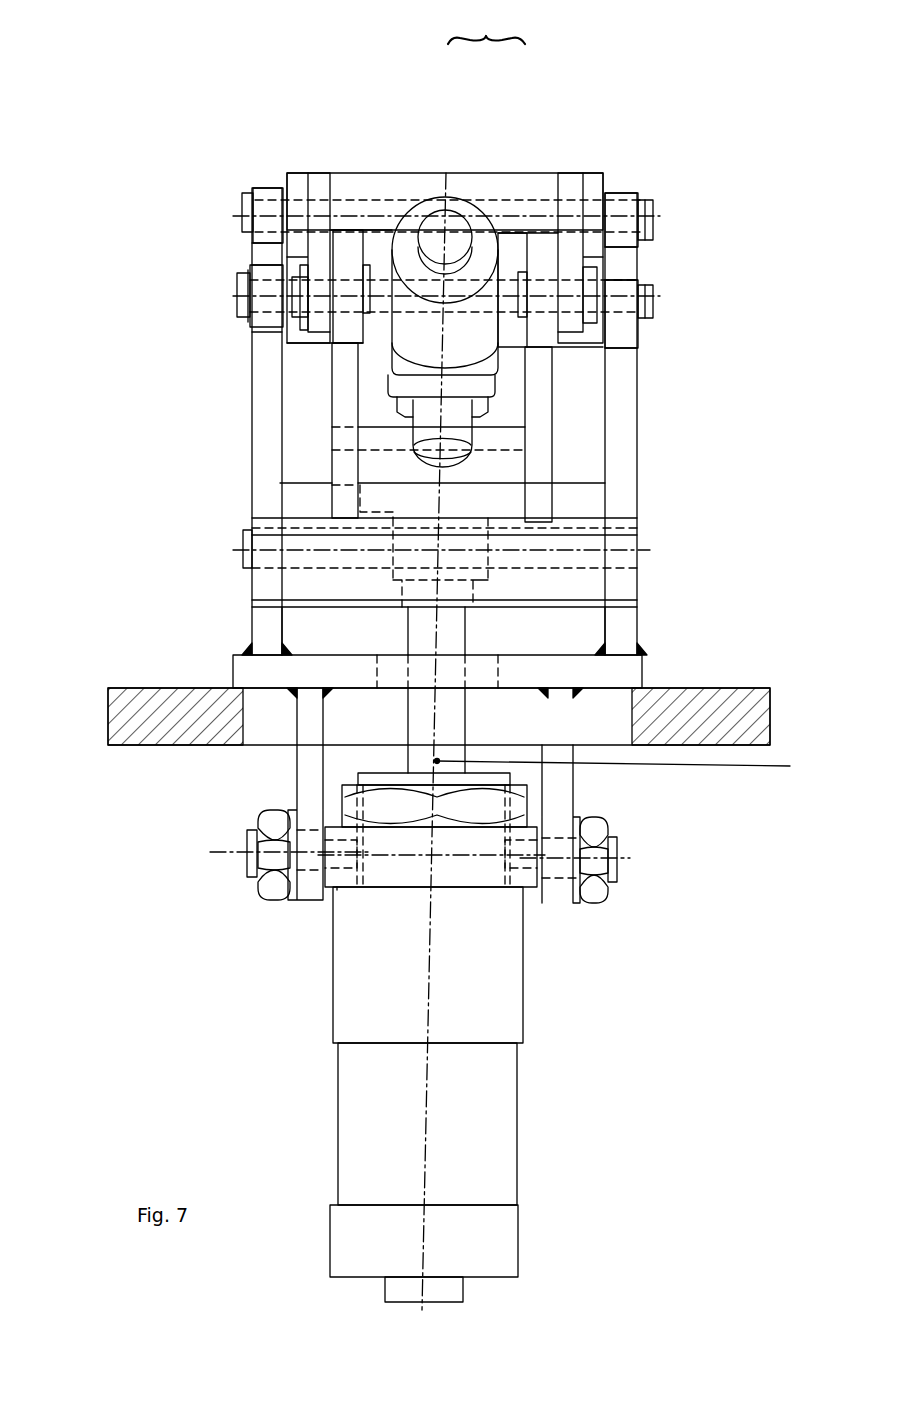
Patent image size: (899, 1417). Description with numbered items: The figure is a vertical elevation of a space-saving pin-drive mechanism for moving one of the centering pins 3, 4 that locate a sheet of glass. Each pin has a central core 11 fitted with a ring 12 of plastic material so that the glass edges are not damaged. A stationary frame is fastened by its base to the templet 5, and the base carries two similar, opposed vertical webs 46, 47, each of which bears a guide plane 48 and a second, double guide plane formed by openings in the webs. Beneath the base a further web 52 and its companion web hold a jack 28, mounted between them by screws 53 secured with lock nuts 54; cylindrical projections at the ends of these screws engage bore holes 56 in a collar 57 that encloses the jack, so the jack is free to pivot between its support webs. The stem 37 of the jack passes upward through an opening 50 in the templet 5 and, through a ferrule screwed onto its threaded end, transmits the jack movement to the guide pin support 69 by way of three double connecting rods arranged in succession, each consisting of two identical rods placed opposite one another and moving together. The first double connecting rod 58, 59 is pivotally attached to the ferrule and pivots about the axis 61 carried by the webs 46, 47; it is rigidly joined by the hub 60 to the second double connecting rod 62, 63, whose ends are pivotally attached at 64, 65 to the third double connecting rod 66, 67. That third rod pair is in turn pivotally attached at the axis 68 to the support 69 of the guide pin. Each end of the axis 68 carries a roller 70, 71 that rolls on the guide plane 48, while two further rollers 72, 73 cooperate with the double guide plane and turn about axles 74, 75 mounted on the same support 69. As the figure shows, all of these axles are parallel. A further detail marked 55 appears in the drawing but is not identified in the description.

The centering pin 3 is at (485, 22).
The centering pin 4 is at (504, 19).
The templet 5 is at (745, 722).
The central core 11 is at (446, 173).
The ring 12 is at (490, 180).
The jack 28 is at (500, 995).
The stem 37 is at (630, 770).
The vertical web 46 is at (257, 411).
The vertical web 47 is at (627, 453).
The guide plane 48 is at (268, 240).
The opening 50 is at (245, 706).
The web 52 is at (567, 797).
The screw 53 is at (247, 852).
The lock nut 54 is at (267, 888).
The condenser lens 55 is at (523, 889).
The bore hole 56 is at (505, 856).
The collar 57 is at (300, 770).
The connecting rod 58 is at (337, 438).
The connecting rod 59 is at (627, 520).
The hub 60 is at (303, 587).
The axis 61 is at (240, 549).
The connecting rod 62 is at (338, 373).
The connecting rod 63 is at (543, 390).
The pivot 64 is at (366, 173).
The pivot 65 is at (523, 283).
The connecting rod 66 is at (320, 185).
The connecting rod 67 is at (575, 182).
The axis 68 is at (655, 218).
The guide pin support 69 is at (348, 180).
The roller 70 is at (262, 183).
The roller 71 is at (625, 192).
The roller 72 is at (233, 307).
The roller 73 is at (620, 280).
The axle 74 is at (233, 293).
The axle 75 is at (658, 302).